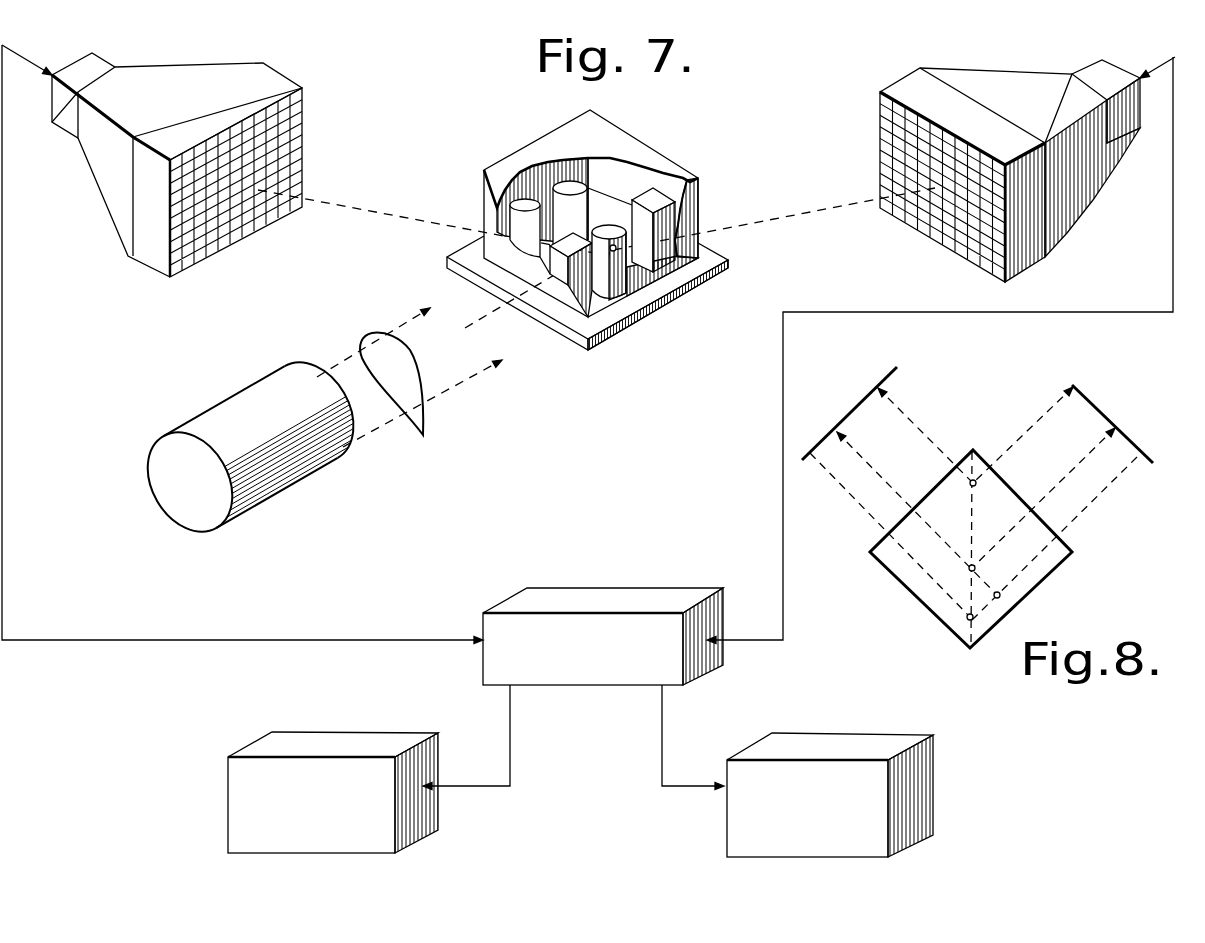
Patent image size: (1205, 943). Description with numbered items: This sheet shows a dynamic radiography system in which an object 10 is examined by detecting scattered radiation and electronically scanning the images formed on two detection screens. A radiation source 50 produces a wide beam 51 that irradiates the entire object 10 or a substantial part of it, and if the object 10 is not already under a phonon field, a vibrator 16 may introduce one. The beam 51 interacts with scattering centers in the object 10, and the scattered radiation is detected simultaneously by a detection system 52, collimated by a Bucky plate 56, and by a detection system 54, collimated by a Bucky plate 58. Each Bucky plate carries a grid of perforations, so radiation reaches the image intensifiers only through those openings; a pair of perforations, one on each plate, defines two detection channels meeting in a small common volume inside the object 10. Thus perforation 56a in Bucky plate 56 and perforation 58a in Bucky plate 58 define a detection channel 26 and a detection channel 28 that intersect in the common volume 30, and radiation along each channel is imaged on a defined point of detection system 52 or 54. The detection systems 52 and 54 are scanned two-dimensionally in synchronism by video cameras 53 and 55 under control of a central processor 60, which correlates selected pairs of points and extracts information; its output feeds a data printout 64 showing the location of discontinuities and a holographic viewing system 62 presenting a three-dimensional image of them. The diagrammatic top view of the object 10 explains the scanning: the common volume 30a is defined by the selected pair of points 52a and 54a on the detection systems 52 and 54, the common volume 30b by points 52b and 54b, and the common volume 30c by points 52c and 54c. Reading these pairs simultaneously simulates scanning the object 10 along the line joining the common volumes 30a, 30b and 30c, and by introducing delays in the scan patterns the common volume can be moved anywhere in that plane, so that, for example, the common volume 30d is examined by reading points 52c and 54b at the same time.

In FIG. 7, the object 10 is at (603, 230).
In FIG. 8, the object 10 is at (937, 617).
In FIG. 7, the vibrator 16 is at (605, 325).
In FIG. 7, the detection channel 26 is at (818, 208).
In FIG. 7, the detection channel 28 is at (360, 202).
In FIG. 7, the common volume 30 is at (616, 256).
In FIG. 8, the common volume 30a is at (976, 485).
In FIG. 8, the common volume 30b is at (975, 566).
In FIG. 8, the common volume 30c is at (972, 620).
In FIG. 8, the common volume 30d is at (1000, 595).
In FIG. 7, the radiation source 50 is at (275, 482).
In FIG. 7, the wide beam 51 is at (405, 393).
In FIG. 7, the detection system 52 is at (1019, 154).
In FIG. 8, the detection system 52 is at (1092, 400).
In FIG. 8, the point on detection system 52a is at (1068, 385).
In FIG. 8, the point on detection system 52b is at (1110, 430).
In FIG. 8, the point on detection system 52c is at (1137, 457).
In FIG. 7, the video camera 53 is at (1093, 67).
In FIG. 7, the detection system 54 is at (157, 153).
In FIG. 8, the detection system 54 is at (858, 403).
In FIG. 8, the point on detection system 54a is at (884, 390).
In FIG. 8, the point on detection system 54b is at (843, 432).
In FIG. 8, the point on detection system 54c is at (810, 453).
In FIG. 7, the video camera 55 is at (90, 62).
In FIG. 7, the Bucky plate 56 is at (903, 85).
In FIG. 7, the perforation 56a is at (950, 195).
In FIG. 7, the Bucky plate 58 is at (270, 88).
In FIG. 7, the perforation 58a is at (247, 183).
In FIG. 7, the central processor 60 is at (665, 595).
In FIG. 7, the holographic viewing system 62 is at (800, 743).
In FIG. 7, the data print out 64 is at (368, 740).